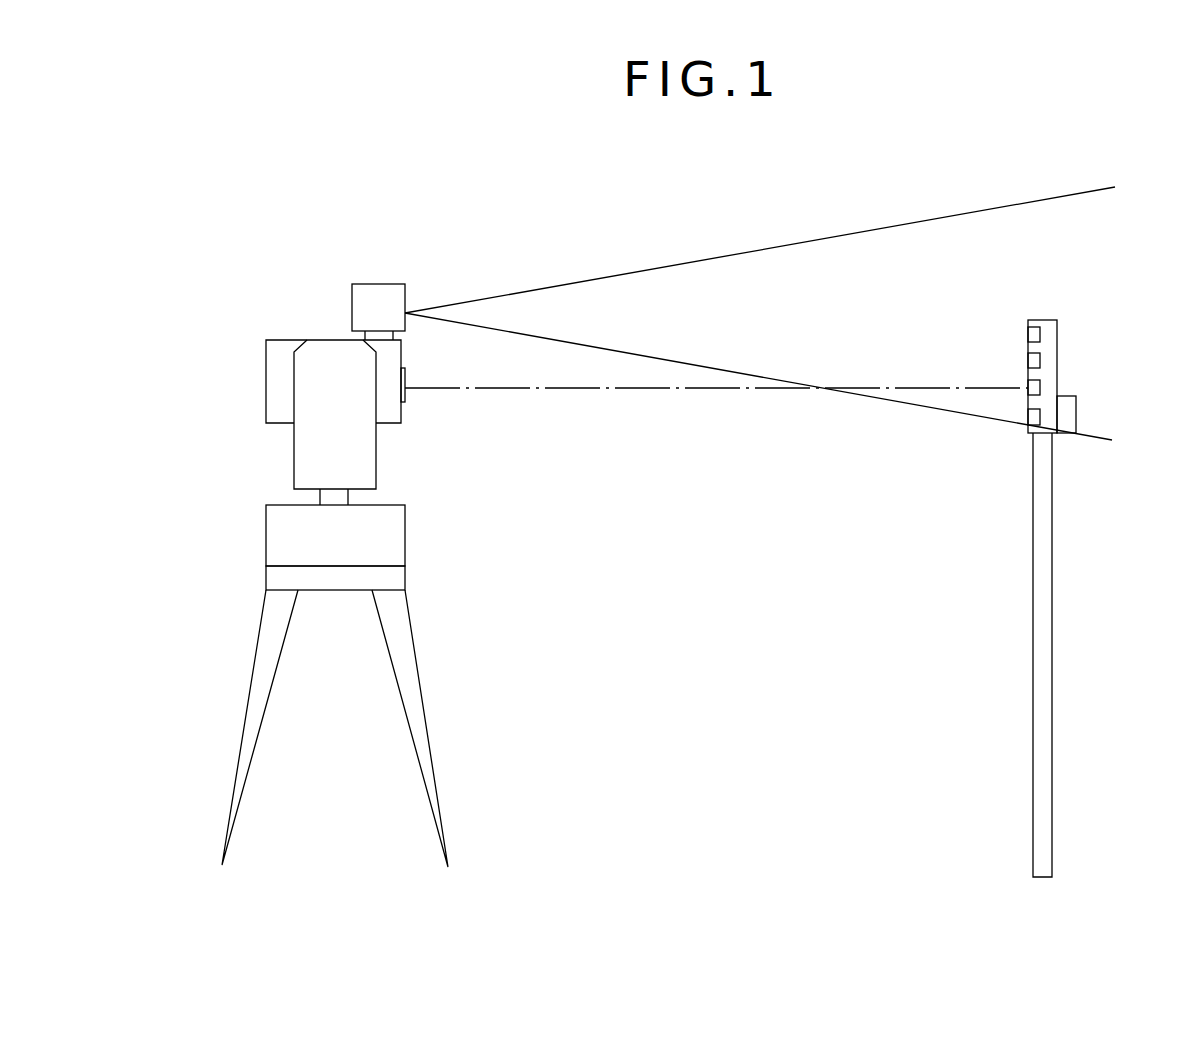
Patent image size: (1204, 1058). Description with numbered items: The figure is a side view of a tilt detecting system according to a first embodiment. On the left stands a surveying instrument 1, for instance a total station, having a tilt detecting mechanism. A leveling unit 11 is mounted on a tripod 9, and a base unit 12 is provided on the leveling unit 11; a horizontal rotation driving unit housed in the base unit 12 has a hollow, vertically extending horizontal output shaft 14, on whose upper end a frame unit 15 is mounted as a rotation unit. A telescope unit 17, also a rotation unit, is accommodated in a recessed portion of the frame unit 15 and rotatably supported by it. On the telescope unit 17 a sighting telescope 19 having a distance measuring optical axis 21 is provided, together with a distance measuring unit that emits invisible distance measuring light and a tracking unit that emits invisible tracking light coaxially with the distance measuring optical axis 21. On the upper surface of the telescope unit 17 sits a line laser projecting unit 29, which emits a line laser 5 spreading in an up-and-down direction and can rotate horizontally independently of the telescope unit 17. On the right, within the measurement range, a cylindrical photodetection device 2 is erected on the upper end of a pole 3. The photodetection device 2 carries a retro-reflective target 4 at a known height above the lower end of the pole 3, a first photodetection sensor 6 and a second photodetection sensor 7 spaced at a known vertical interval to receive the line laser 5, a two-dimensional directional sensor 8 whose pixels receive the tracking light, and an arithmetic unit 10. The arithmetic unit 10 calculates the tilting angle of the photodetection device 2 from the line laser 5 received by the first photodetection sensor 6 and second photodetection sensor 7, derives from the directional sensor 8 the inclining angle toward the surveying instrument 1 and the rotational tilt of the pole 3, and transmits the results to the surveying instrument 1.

The surveying instrument 1 is at (243, 318).
The photodetection device 2 is at (1057, 336).
The pole 3 is at (1052, 598).
The target 4 is at (1028, 385).
The line laser 5 is at (978, 211).
The first photodetection sensor 6 is at (1028, 334).
The second photodetection sensor 7 is at (1027, 418).
The directional sensor 8 is at (1028, 360).
The tripod 9 is at (418, 672).
The arithmetic unit 10 is at (1077, 410).
The leveling unit 11 is at (405, 578).
The base unit 12 is at (405, 528).
The horizontal output shaft 14 is at (348, 496).
The frame unit 15 is at (293, 450).
The telescope unit 17 is at (283, 340).
The sighting telescope 19 is at (405, 395).
The distance measuring optical axis 21 is at (662, 392).
The line laser projecting unit 29 is at (375, 284).